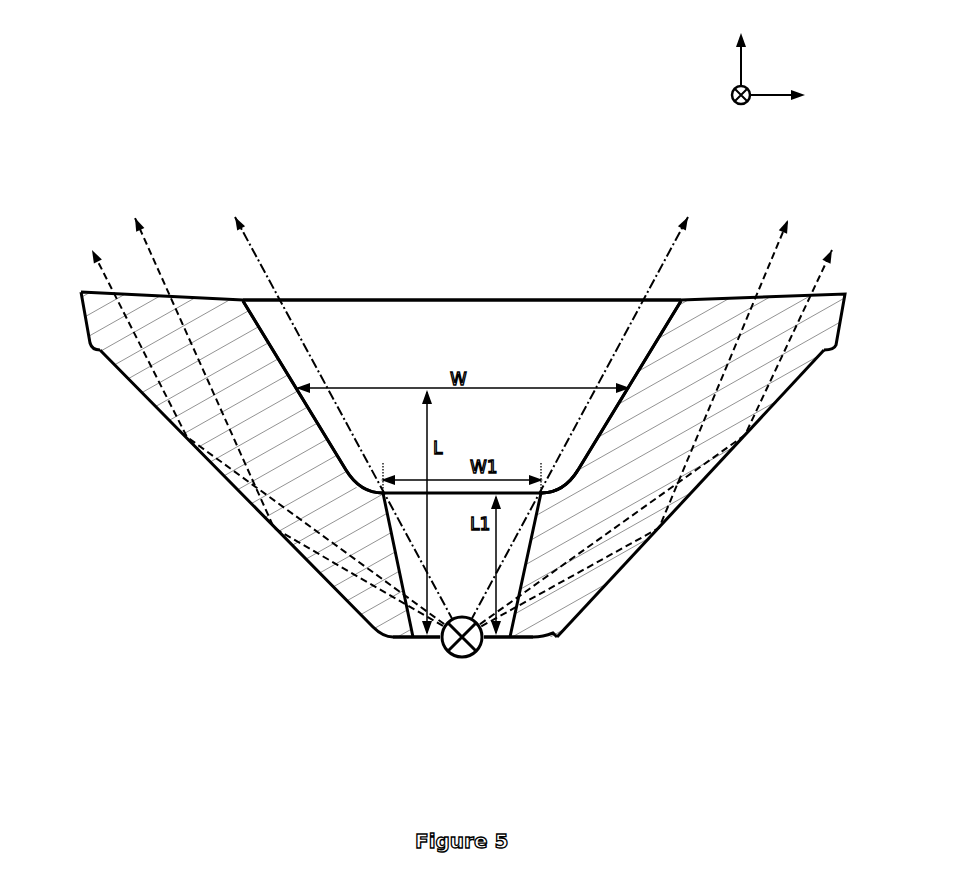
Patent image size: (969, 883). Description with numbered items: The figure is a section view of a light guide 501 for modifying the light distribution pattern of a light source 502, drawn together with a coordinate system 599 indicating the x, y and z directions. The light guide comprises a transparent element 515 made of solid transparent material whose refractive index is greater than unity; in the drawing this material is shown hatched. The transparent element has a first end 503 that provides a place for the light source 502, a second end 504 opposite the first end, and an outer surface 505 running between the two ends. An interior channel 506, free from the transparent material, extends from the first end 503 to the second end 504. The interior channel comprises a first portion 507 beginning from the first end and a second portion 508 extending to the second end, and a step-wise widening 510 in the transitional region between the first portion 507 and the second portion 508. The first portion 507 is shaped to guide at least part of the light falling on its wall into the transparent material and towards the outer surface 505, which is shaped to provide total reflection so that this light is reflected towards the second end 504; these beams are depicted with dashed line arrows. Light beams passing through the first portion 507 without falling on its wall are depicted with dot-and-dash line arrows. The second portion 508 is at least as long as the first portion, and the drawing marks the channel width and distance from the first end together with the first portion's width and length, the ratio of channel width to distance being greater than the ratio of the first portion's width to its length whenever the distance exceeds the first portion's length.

The light guide 501 is at (80, 312).
The light source 502 is at (465, 656).
The first end 503 is at (398, 638).
The second end 504 is at (416, 298).
The outer surface 505 is at (722, 465).
The interior channel 506 is at (535, 343).
The first portion 507 is at (480, 558).
The second portion 508 is at (452, 346).
The step-wise widening 510 is at (559, 488).
The transparent element 515 is at (288, 442).
The coordinate system 599 is at (748, 130).